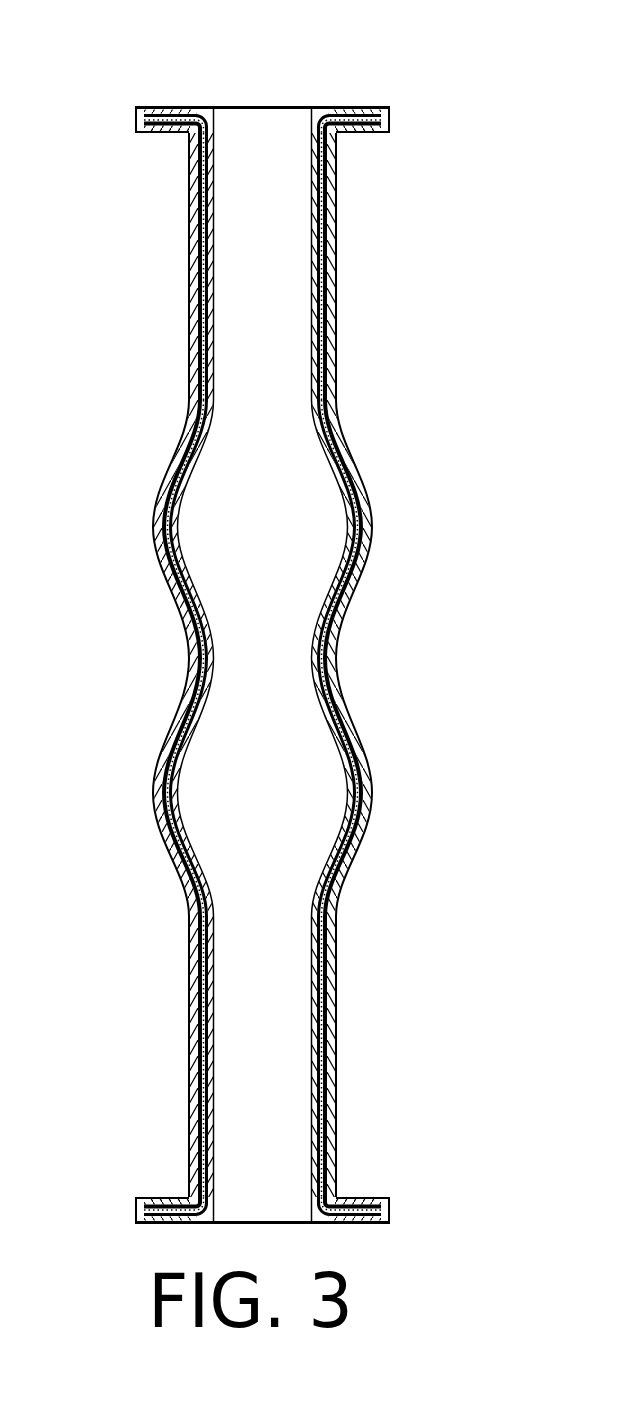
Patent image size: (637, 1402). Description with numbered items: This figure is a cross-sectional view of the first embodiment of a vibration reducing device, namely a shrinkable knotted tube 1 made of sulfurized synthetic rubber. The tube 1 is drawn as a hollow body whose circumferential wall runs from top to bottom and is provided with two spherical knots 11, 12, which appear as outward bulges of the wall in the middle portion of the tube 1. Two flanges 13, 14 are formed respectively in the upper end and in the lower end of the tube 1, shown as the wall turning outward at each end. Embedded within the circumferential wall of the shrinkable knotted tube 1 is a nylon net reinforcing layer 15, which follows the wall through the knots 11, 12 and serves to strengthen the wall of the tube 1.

The shrinkable knotted tube 1 is at (335, 248).
The spherical knot 11 is at (372, 520).
The spherical knot 12 is at (372, 785).
The flange 13 is at (179, 109).
The flange 14 is at (367, 1193).
The net reinforcing layer 15 is at (191, 658).